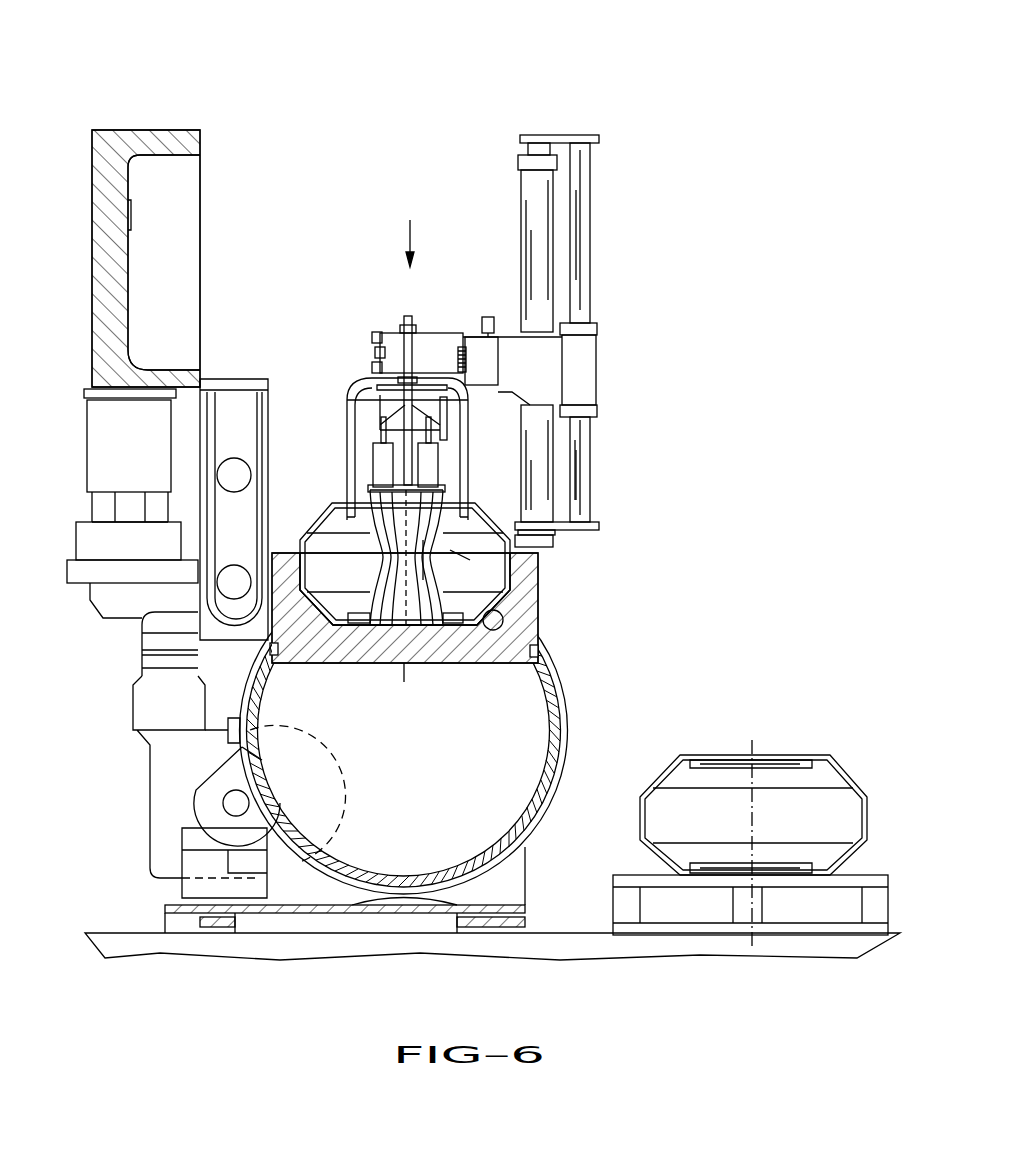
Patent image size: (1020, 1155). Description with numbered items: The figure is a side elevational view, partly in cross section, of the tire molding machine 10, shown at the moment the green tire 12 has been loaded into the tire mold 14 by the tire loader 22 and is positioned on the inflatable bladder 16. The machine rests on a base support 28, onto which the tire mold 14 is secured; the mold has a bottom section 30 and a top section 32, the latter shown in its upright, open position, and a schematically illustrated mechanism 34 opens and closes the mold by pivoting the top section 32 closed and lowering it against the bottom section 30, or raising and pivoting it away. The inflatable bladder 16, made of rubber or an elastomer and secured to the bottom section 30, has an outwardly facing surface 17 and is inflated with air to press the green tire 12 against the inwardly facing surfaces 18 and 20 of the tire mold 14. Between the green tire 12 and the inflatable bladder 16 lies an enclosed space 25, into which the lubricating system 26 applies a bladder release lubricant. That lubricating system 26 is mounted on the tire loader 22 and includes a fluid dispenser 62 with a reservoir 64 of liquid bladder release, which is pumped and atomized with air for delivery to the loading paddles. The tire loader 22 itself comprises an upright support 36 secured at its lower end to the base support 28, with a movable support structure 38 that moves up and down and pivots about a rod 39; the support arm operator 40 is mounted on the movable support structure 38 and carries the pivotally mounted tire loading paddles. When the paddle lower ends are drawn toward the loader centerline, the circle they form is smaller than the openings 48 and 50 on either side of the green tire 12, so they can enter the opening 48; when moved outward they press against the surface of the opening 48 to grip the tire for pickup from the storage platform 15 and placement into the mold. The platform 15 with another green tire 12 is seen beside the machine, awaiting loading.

The tire molding machine 10 is at (303, 102).
The green tire 12 is at (313, 525).
The tire mold 14 is at (455, 678).
The platform 15 is at (623, 883).
The inflatable bladder 16 is at (388, 567).
The outwardly facing surface 17 is at (423, 576).
The inwardly facing surface 18 is at (483, 607).
The inwardly facing surface 20 is at (123, 182).
The tire loader 22 is at (623, 308).
The enclosed space 25 is at (462, 555).
The lubricating system 26 is at (451, 352).
The base support 28 is at (500, 882).
The bottom section 30 is at (363, 643).
The top section 32 is at (107, 292).
The mechanism 34 is at (122, 667).
The upright support 36 is at (615, 378).
The movable support structure 38 is at (398, 350).
The rod 39 is at (578, 485).
The support arm operator 40 is at (356, 378).
The opening 48 is at (792, 763).
The opening 50 is at (790, 870).
The fluid dispenser 62 is at (487, 372).
The reservoir 64 is at (485, 318).